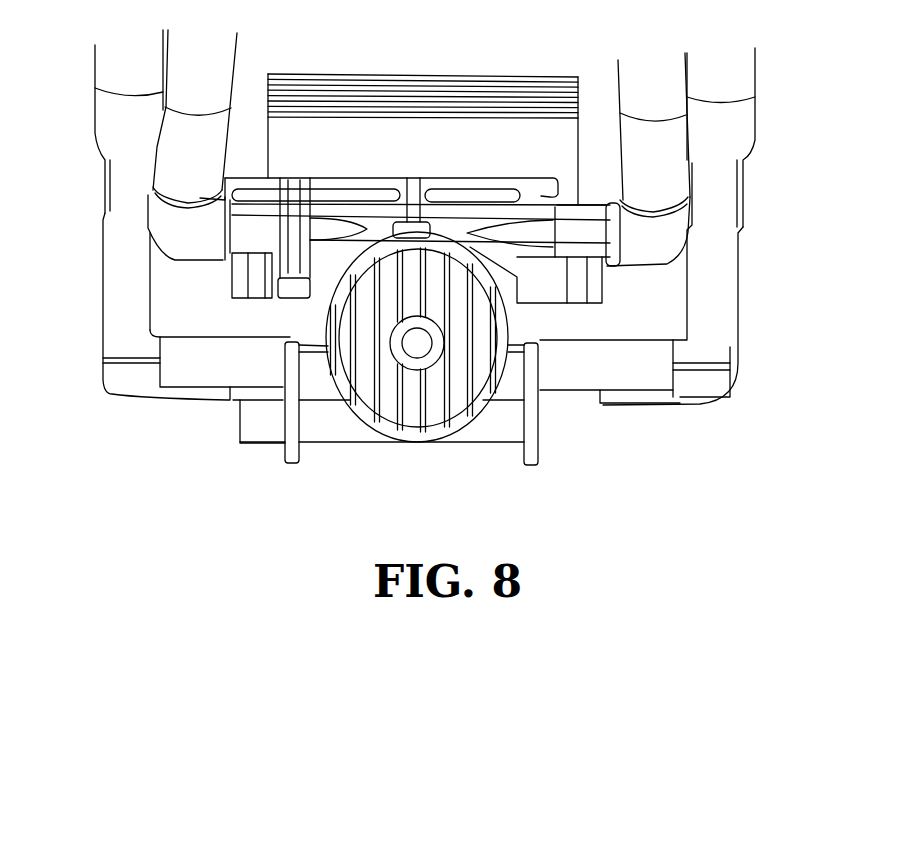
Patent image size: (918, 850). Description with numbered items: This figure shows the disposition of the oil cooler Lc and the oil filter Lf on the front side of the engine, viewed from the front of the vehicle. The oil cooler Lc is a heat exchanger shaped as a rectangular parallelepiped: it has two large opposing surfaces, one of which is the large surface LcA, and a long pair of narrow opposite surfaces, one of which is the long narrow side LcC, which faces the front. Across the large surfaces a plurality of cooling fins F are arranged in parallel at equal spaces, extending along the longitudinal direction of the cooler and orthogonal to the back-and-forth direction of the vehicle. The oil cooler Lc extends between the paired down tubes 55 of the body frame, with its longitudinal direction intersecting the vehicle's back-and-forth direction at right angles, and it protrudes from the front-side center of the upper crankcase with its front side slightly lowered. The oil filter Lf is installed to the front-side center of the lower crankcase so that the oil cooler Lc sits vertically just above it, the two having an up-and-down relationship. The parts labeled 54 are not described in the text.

The down tubes 55 is at (186, 70).
The fork leg lower portion 54 is at (117, 243).
The oil cooler Lc is at (432, 104).
The cooling fins F is at (423, 70).
The long narrow side surface LcC is at (453, 143).
The large surface LcA is at (432, 65).
The oil filter Lf is at (477, 400).